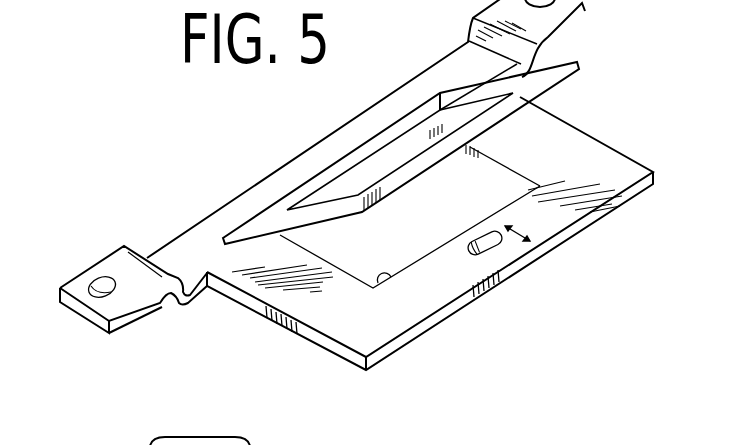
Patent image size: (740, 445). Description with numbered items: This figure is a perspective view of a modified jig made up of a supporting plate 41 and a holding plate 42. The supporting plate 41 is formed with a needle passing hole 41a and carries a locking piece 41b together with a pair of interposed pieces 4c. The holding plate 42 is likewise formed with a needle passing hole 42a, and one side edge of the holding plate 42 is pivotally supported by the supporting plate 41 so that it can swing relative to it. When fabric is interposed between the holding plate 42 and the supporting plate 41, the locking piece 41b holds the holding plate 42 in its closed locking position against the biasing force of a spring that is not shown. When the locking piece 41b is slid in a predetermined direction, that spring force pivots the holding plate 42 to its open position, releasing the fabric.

The interposed pieces 4c is at (139, 302).
The supporting plate 41 is at (588, 222).
The needle passing hole 41a is at (375, 290).
The locking piece 41b is at (480, 240).
The holding plate 42 is at (513, 107).
The needle passing hole 42a is at (395, 145).